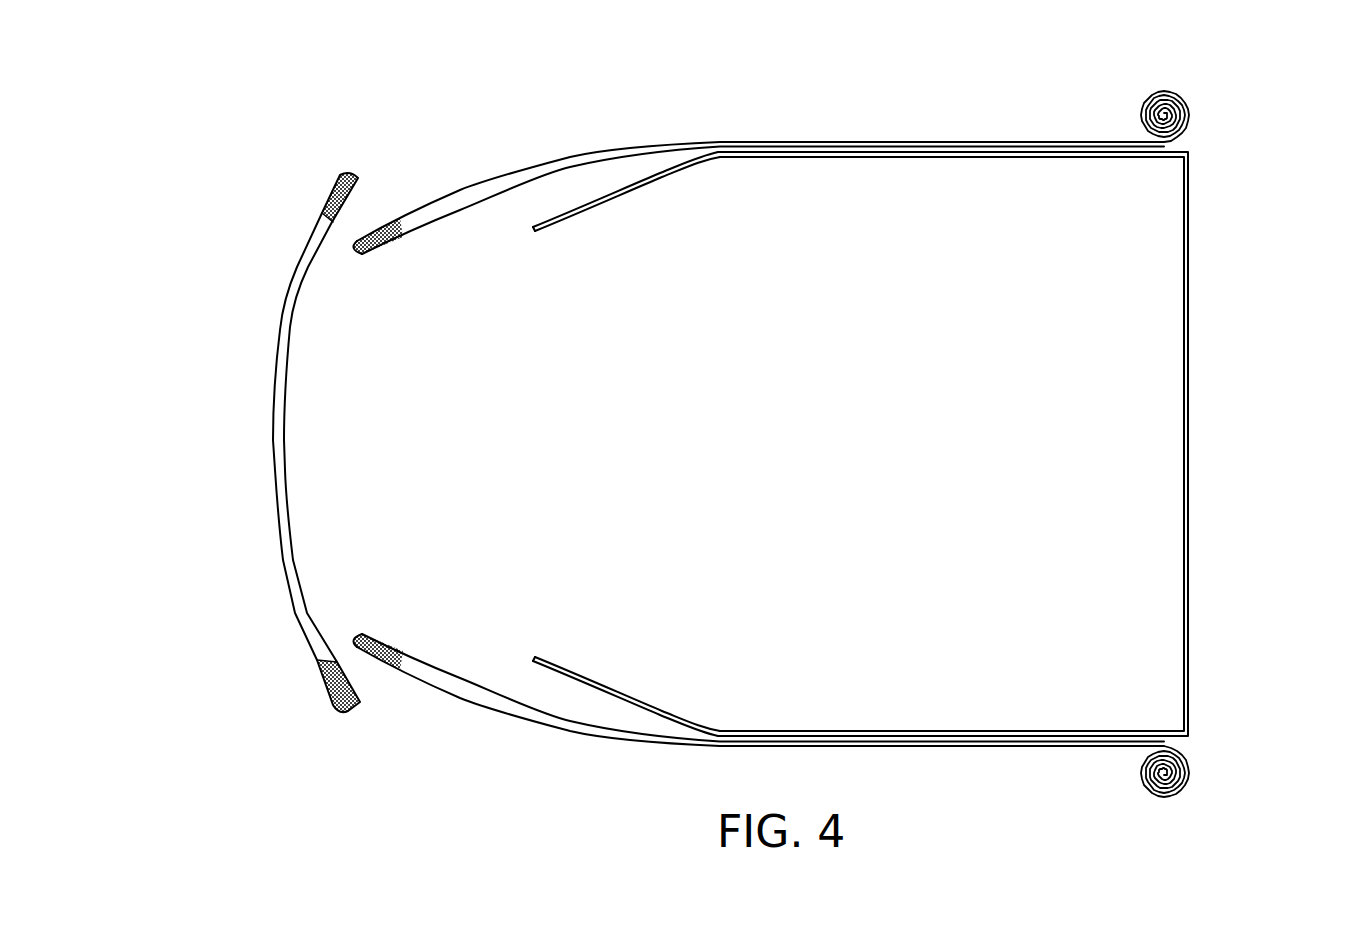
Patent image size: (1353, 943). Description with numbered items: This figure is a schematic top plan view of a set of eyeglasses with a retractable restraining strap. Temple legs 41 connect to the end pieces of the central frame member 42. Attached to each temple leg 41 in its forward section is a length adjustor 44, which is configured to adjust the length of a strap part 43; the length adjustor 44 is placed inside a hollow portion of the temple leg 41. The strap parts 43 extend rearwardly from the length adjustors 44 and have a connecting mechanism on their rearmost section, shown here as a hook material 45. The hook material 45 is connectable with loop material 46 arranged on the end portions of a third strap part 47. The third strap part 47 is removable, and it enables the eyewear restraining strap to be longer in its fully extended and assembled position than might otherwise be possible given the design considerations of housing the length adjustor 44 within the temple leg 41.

The temple leg 41 is at (791, 157).
The central frame member 42 is at (1185, 456).
The strap part 43 is at (461, 191).
The length adjustor 44 is at (1198, 106).
The hook material 45 is at (379, 251).
The loop material 46 is at (327, 191).
The third strap part 47 is at (272, 425).